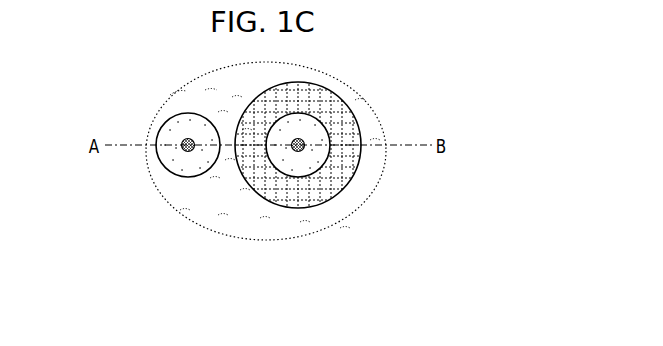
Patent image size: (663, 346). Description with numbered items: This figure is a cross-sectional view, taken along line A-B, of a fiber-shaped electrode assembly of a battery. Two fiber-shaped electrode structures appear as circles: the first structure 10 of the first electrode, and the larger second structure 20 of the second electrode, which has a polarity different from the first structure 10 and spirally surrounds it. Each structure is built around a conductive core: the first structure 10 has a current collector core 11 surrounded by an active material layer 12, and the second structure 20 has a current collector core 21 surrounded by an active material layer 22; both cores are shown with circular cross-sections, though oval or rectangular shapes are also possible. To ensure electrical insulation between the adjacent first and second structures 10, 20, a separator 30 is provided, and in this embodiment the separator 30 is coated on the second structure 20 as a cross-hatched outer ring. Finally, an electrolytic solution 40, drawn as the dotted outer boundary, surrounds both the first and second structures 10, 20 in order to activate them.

The first structure 10 is at (175, 226).
The current collector core 11 is at (186, 151).
The active material layer 12 is at (193, 165).
The second structure 20 is at (295, 226).
The current collector core 21 is at (296, 151).
The active material layer 22 is at (307, 158).
The separator 30 is at (340, 196).
The electrolytic solution 40 is at (367, 178).